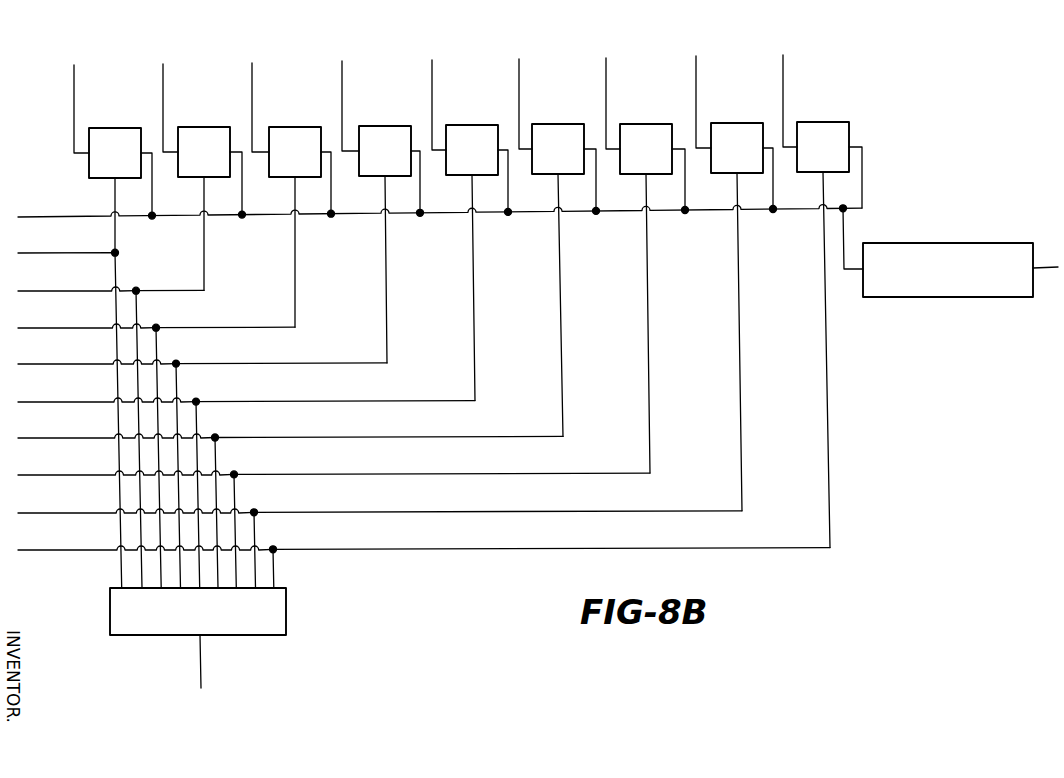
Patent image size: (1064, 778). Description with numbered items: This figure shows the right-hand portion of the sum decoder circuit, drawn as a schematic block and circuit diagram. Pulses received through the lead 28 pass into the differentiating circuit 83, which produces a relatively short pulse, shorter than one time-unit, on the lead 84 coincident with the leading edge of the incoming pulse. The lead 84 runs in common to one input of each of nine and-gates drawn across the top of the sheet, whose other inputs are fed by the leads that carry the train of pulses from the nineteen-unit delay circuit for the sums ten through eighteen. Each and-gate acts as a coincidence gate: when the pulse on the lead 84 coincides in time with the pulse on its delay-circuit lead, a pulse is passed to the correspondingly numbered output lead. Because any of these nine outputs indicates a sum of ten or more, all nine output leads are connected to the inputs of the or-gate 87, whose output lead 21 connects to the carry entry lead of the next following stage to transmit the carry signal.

The output lead 21 is at (200, 677).
The lead 28 is at (1048, 269).
The differentiating circuit 83 is at (939, 221).
The lead 84 is at (32, 192).
The or-gate 87 is at (284, 598).